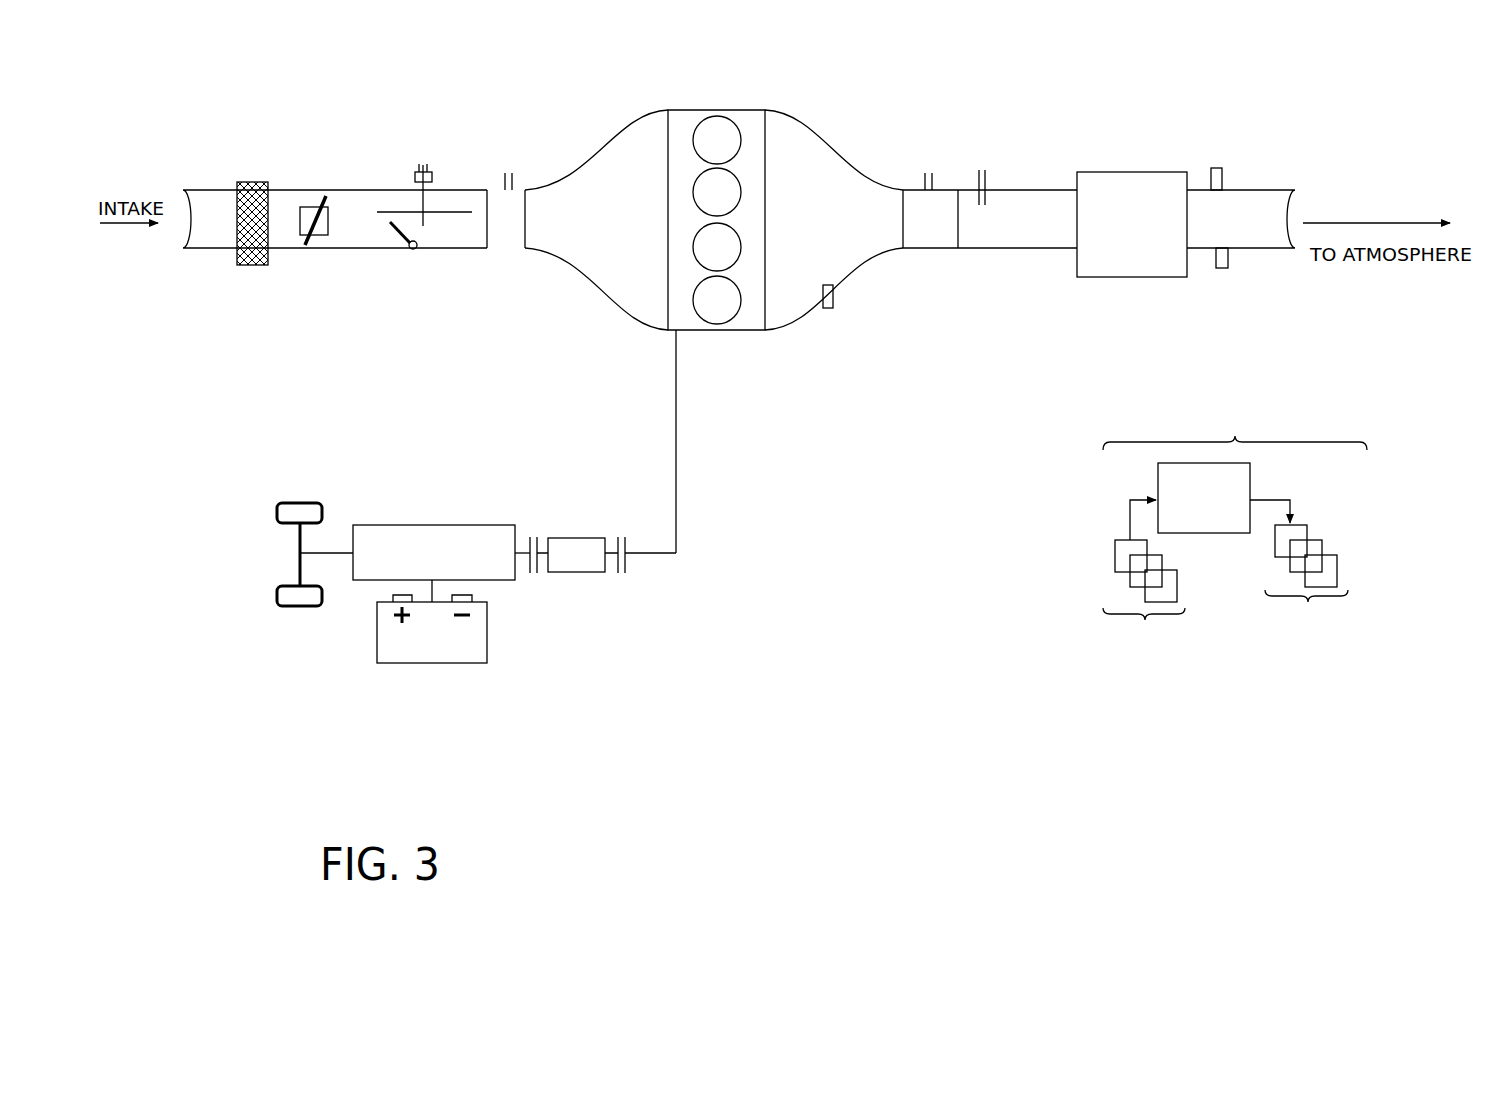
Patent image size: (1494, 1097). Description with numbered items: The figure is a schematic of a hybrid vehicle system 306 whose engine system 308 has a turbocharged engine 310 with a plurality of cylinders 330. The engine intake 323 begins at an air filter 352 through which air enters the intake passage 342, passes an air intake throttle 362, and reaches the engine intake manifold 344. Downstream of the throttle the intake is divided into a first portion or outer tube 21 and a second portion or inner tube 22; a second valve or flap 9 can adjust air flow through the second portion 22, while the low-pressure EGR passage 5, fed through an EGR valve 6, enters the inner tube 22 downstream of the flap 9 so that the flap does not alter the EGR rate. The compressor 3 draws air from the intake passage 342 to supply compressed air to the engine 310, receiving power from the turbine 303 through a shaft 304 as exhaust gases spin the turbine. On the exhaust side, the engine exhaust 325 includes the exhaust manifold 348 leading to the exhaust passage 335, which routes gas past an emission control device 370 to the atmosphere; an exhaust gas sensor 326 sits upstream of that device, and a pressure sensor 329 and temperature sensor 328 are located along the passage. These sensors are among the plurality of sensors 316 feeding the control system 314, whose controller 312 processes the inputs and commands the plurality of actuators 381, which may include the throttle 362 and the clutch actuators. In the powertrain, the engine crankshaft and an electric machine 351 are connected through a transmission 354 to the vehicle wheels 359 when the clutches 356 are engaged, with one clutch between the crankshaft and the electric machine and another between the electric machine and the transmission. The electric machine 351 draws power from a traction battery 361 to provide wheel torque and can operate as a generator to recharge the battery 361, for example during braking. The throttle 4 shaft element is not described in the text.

The vehicle system 306 is at (205, 93).
The engine system 308 is at (1322, 93).
The intake passage 342 is at (215, 250).
The air filter 352 is at (258, 182).
The air intake throttle 362 is at (331, 230).
The first portion 21 is at (383, 200).
The throttle shaft 4 is at (445, 202).
The EGR valve 6 is at (420, 170).
The second valve 9 is at (400, 250).
The EGR passage 5 is at (425, 240).
The second portion 22 is at (460, 252).
The compressor 3 is at (506, 219).
The shaft 304 is at (512, 187).
The engine intake 323 is at (590, 142).
The engine intake manifold 344 is at (596, 220).
The engine 310 is at (767, 210).
The cylinders 330 is at (742, 140).
The engine exhaust 325 is at (880, 148).
The exhaust manifold 348 is at (834, 220).
The exhaust gas sensor 326 is at (834, 300).
The turbine 303 is at (930, 219).
The exhaust passage 335 is at (1270, 190).
The emission control device 370 is at (1120, 172).
The pressure sensor 329 is at (1218, 168).
The temperature sensor 328 is at (1222, 268).
The vehicle wheels 359 is at (290, 607).
The transmission 354 is at (372, 582).
The clutches 356 is at (540, 543).
The electric machine 351 is at (578, 573).
The traction battery 361 is at (437, 665).
The control system 314 is at (1235, 421).
The controller 312 is at (1204, 498).
The sensors 316 is at (1144, 586).
The actuators 381 is at (1299, 578).